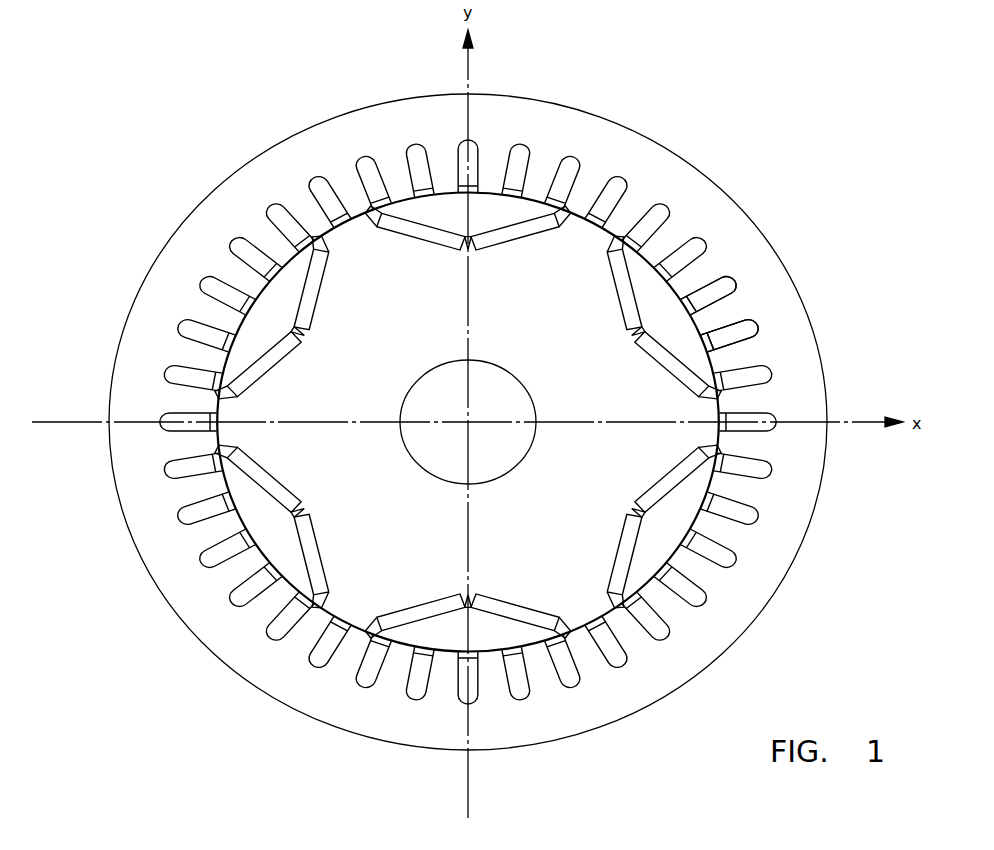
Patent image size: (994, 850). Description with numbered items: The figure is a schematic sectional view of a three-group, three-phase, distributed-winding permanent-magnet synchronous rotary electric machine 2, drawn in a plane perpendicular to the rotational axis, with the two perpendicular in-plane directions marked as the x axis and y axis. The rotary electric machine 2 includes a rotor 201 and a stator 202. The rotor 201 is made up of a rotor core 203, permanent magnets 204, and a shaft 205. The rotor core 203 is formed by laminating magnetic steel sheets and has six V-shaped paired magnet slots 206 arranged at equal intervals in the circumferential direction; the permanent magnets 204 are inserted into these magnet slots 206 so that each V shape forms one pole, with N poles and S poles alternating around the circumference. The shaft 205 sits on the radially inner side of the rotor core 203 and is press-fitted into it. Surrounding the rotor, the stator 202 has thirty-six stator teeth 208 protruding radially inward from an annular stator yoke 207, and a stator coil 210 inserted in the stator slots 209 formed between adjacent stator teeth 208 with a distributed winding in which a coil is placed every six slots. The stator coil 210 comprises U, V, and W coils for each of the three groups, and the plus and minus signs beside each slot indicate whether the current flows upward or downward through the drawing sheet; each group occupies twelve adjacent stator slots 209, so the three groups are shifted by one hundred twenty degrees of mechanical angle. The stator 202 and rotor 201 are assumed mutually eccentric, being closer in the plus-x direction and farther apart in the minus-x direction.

The rotary electric machine 2 is at (160, 102).
The rotor 201 is at (203, 307).
The stator 202 is at (192, 213).
The rotor core 203 is at (368, 260).
The permanent magnets 204 is at (712, 358).
The shaft 205 is at (503, 460).
The magnet slots 206 is at (720, 448).
The stator yoke 207 is at (613, 140).
The stator teeth 208 is at (627, 215).
The stator slots 209 is at (720, 300).
The stator coil 210 is at (653, 257).